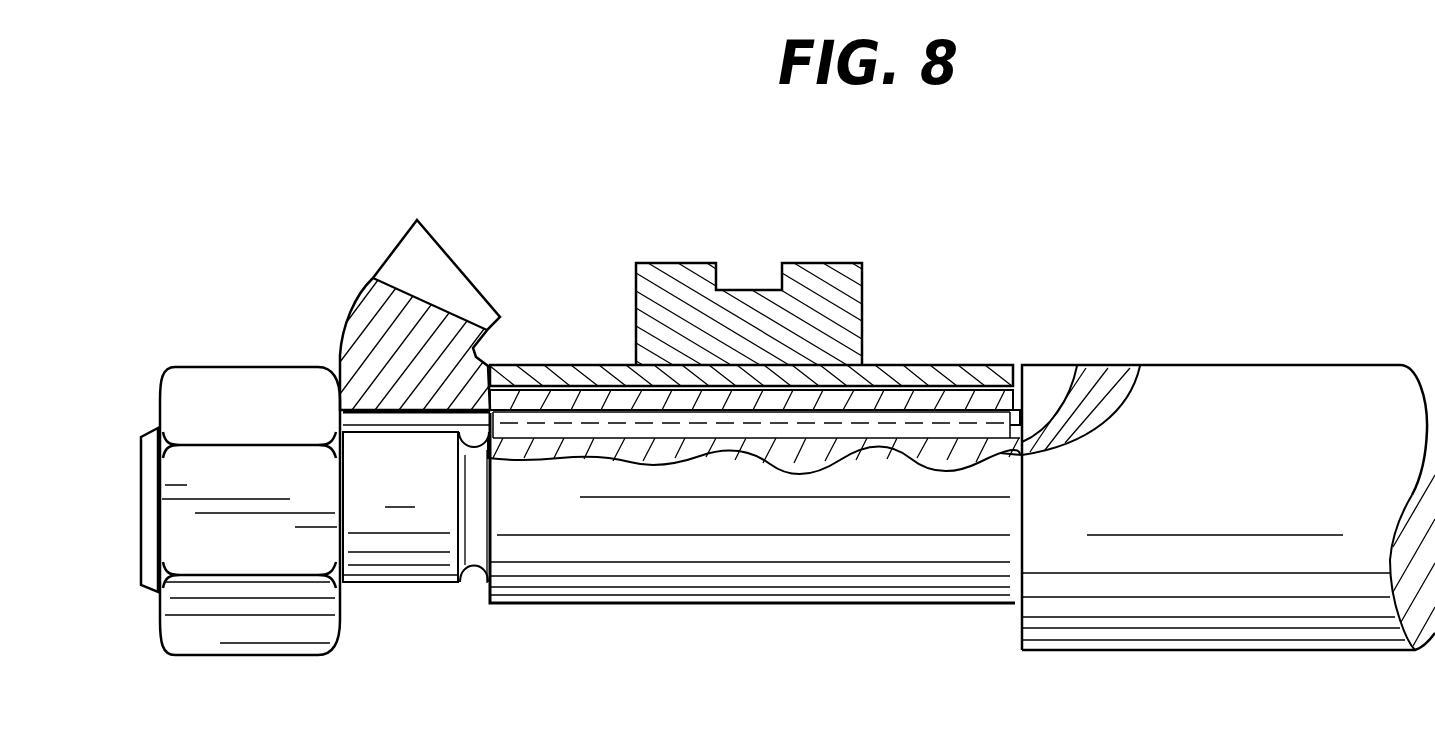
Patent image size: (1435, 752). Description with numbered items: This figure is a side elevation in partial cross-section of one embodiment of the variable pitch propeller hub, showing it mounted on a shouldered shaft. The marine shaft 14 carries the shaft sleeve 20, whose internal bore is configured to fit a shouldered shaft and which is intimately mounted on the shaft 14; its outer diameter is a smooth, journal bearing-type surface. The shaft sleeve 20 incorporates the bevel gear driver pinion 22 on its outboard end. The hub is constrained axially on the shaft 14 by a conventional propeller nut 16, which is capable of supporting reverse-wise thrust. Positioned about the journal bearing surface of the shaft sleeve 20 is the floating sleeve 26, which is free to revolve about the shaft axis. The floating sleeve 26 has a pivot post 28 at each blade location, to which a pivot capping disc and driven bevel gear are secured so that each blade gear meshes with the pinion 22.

The marine shaft 14 is at (1283, 378).
The propeller nut 16 is at (170, 520).
The shaft sleeve 20 is at (567, 397).
The bevel gear driver pinion 22 is at (400, 250).
The floating sleeve 26 is at (918, 367).
The pivot post 28 is at (865, 300).